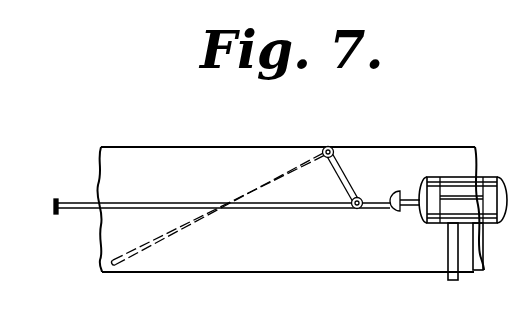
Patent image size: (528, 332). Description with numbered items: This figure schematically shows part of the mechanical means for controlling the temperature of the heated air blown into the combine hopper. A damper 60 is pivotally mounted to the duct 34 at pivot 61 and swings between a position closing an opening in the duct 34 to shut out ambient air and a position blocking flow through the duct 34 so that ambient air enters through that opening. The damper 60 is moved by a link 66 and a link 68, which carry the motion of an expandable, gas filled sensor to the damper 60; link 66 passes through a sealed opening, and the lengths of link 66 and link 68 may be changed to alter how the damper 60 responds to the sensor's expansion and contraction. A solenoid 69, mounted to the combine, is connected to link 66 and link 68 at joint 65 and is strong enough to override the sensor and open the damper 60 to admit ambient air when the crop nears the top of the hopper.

The duct 34 is at (423, 150).
The damper 60 is at (289, 170).
The pivot 61 is at (341, 145).
The joint 65 is at (356, 212).
The link 66 is at (265, 209).
The link 68 is at (341, 182).
The solenoid 69 is at (437, 226).